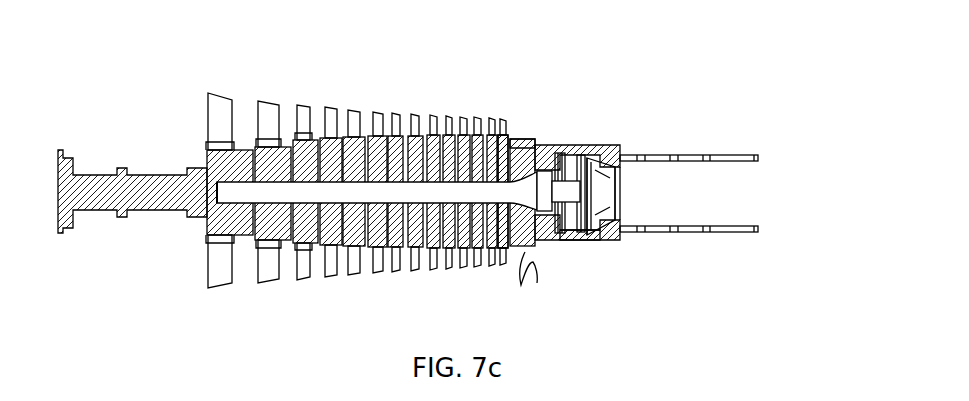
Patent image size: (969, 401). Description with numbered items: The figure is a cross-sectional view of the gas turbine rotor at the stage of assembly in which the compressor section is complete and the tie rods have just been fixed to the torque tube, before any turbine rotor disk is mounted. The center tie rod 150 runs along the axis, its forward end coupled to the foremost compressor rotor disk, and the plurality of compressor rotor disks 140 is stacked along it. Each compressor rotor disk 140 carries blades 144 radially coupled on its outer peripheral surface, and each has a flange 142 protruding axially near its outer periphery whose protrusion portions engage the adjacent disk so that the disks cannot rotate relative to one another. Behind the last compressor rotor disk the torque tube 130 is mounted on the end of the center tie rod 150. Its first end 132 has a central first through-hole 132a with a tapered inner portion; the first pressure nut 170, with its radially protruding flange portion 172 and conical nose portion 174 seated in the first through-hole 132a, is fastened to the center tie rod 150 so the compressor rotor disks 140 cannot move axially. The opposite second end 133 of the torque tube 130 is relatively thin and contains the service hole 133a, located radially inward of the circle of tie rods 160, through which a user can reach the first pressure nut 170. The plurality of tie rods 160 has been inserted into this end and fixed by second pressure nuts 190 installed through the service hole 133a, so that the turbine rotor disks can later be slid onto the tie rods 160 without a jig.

The torque tube 130 is at (549, 135).
The first end 132 is at (535, 142).
The first through-hole 132a is at (525, 143).
The second end 133 is at (610, 143).
The service hole 133a is at (587, 247).
The compressor rotor disk 140 is at (335, 144).
The flange 142 is at (228, 148).
The blade 144 is at (267, 108).
The center tie rod 150 is at (205, 217).
The tie rod 160 is at (740, 158).
The first pressure nut 170 is at (520, 287).
The flange portion 172 is at (500, 265).
The nose portion 174 is at (445, 268).
The second pressure nut 190 is at (585, 143).